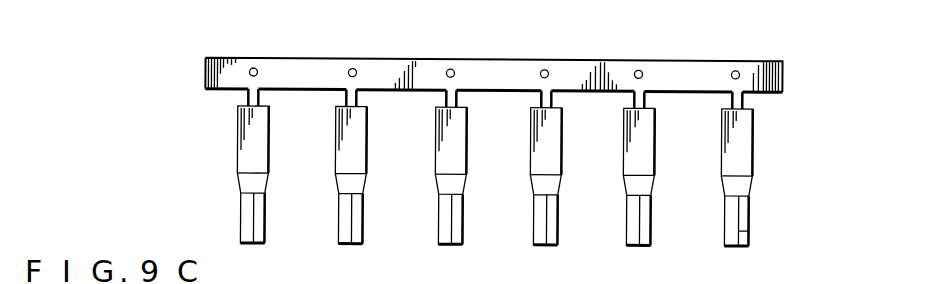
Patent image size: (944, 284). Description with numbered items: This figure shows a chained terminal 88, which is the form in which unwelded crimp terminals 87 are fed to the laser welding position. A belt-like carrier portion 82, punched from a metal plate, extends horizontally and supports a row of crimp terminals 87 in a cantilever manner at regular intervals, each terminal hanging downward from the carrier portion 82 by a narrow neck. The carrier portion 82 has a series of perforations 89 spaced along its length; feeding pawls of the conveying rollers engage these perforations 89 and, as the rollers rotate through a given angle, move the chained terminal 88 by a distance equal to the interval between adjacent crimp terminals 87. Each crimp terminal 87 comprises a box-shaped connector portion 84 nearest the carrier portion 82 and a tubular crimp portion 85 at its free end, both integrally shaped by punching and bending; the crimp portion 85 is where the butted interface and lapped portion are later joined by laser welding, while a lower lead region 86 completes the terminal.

The carrier portion 82 is at (783, 79).
The box-shaped connector portion 84 is at (775, 143).
The tubular crimp portion 85 is at (775, 186).
The lead portion 86 is at (776, 221).
The crimp terminal 87 is at (268, 145).
The chained terminal 88 is at (226, 121).
The perforations 89 is at (253, 68).